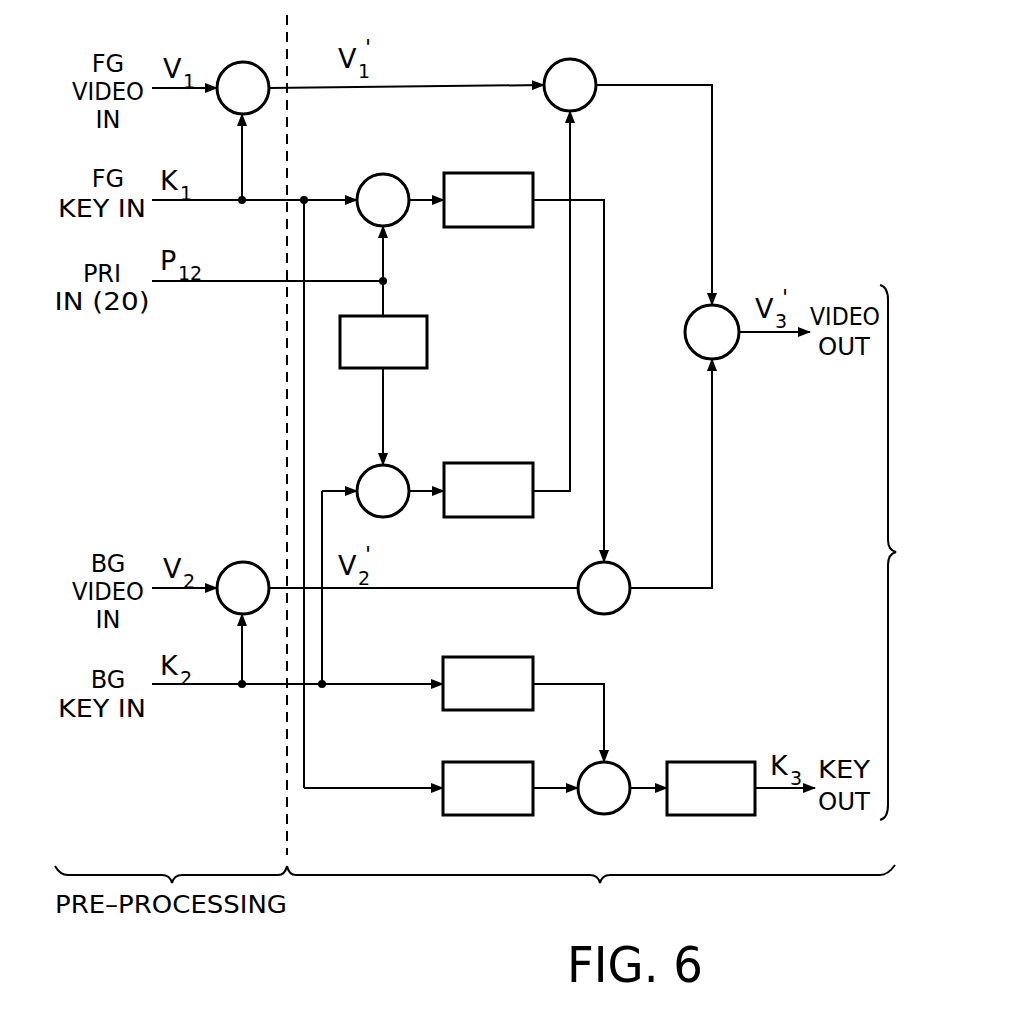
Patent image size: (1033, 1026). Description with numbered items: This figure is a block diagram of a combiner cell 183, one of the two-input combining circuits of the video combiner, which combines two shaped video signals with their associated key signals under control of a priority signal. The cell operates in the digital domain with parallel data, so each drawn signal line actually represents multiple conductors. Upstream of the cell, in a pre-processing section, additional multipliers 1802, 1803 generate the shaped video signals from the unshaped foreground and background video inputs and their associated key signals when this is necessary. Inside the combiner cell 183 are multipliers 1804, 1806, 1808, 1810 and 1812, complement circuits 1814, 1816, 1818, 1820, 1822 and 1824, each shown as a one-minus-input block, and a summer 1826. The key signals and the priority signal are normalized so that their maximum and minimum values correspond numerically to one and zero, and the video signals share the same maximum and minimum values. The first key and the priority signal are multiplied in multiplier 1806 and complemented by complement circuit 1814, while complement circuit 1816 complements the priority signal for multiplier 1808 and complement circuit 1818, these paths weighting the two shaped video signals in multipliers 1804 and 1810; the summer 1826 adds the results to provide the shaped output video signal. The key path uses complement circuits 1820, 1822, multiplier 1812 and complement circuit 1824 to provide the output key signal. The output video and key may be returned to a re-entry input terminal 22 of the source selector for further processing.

The multiplier 1802 is at (262, 67).
The multiplier 1803 is at (253, 562).
The multiplier 1804 is at (596, 74).
The multiplier 1806 is at (402, 177).
The multiplier 1808 is at (403, 472).
The multiplier 1810 is at (604, 614).
The multiplier 1812 is at (622, 808).
The complement circuit 1814 is at (520, 173).
The complement circuit 1816 is at (427, 333).
The complement circuit 1818 is at (535, 470).
The complement circuit 1820 is at (510, 657).
The complement circuit 1822 is at (510, 762).
The complement circuit 1824 is at (740, 760).
The summer 1826 is at (738, 347).
The re-entry input terminal 22 is at (918, 552).
The combining circuit 183 is at (591, 892).